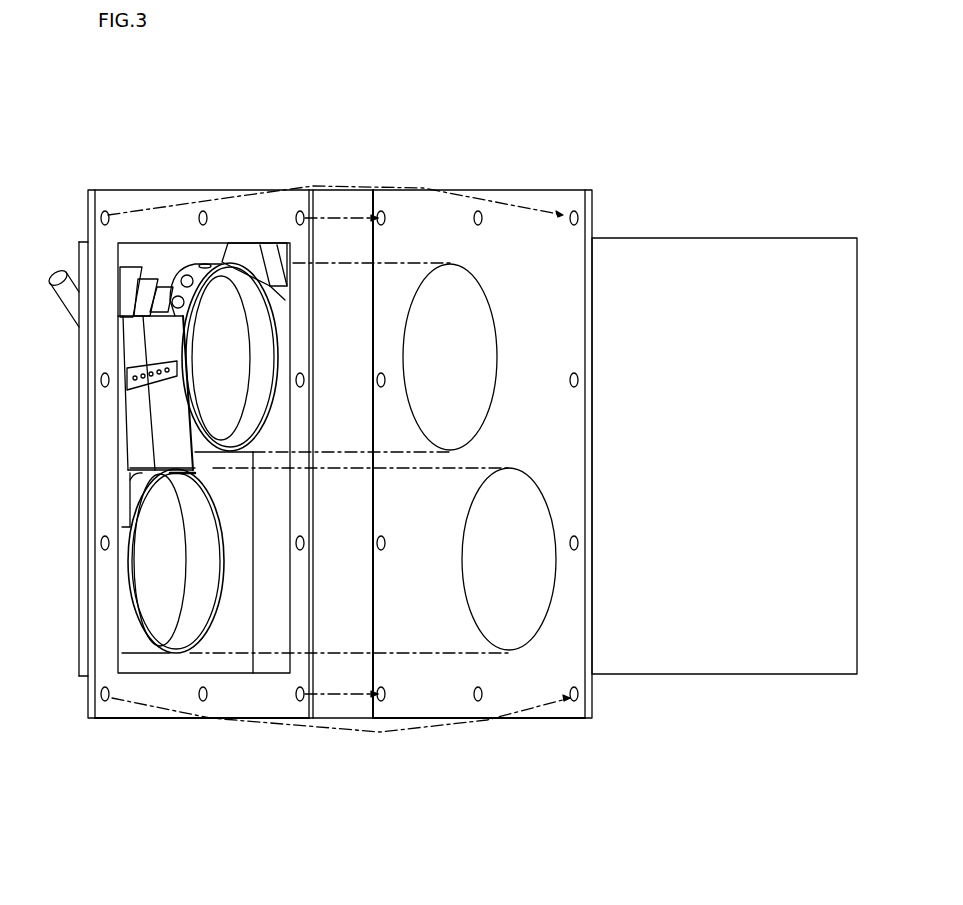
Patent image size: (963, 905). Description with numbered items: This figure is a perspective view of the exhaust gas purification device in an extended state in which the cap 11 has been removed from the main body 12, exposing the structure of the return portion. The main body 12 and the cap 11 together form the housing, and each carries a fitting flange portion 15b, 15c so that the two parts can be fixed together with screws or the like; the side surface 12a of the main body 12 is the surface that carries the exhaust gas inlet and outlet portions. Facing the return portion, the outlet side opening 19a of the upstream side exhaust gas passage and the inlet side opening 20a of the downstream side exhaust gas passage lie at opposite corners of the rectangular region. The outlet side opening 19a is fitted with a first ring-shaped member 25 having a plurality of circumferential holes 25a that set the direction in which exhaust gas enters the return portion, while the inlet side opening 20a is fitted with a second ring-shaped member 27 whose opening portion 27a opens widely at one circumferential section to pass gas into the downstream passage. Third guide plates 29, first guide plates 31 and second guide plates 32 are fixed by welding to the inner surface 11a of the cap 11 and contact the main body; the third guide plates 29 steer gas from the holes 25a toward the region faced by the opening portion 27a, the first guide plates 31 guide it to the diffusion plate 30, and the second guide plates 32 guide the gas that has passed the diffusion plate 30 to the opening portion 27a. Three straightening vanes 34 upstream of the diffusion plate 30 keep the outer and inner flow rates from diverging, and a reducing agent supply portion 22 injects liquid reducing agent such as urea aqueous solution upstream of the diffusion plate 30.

The cap 11 is at (110, 184).
The inner surface of the cap 11a is at (232, 615).
The main body 12 is at (654, 187).
The side surface of the main body 12a is at (442, 582).
The fitting flange portion 15b is at (140, 696).
The fitting flange portion 15c is at (457, 707).
The outlet side opening of the upstream side exhaust gas passage 19a is at (441, 290).
The inlet side opening of the downstream side exhaust gas passage 20a is at (478, 615).
The reducing agent supply portion 22 is at (62, 297).
The first ring-shaped member 25 is at (265, 346).
The holes 25a is at (185, 275).
The second ring-shaped member 27 is at (130, 598).
The opening portion 27a is at (137, 480).
The third guide plates 29 is at (283, 258).
The diffusion plate 30 is at (132, 378).
The first guide plates 31 is at (163, 330).
The second guide plates 32 is at (130, 427).
The straightening vanes 34 is at (138, 297).